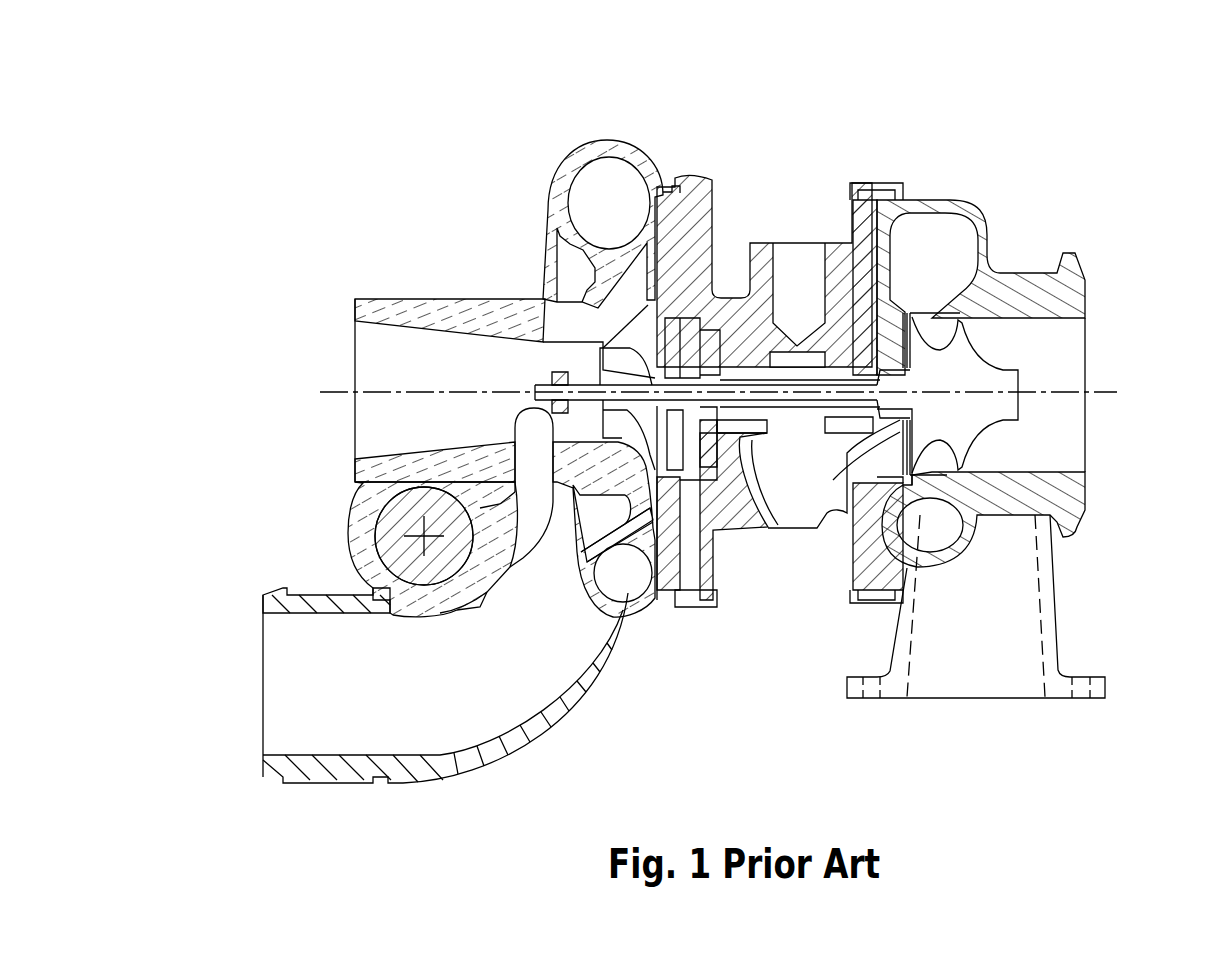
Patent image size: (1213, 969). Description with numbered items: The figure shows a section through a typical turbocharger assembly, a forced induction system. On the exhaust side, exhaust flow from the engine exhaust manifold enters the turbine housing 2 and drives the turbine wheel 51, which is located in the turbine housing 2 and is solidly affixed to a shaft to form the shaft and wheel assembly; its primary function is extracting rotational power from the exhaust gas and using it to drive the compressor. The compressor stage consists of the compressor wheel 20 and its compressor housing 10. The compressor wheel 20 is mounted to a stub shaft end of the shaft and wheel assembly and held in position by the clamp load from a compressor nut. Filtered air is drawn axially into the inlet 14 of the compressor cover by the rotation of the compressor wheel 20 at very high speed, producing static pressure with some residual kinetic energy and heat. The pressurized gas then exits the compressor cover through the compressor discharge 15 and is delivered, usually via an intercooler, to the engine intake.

The turbine housing 2 is at (967, 207).
The compressor housing 10 is at (563, 168).
The inlet 14 is at (378, 375).
The compressor discharge 15 is at (261, 673).
The compressor wheel 20 is at (648, 372).
The turbine wheel 51 is at (944, 378).